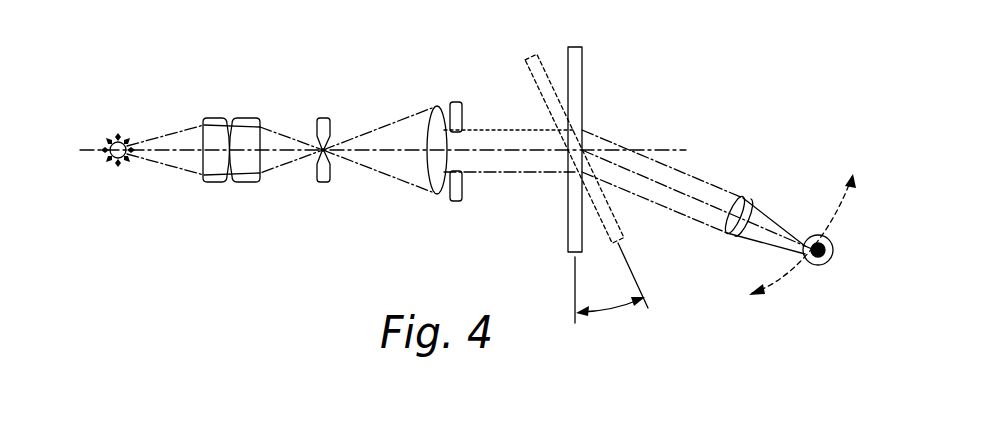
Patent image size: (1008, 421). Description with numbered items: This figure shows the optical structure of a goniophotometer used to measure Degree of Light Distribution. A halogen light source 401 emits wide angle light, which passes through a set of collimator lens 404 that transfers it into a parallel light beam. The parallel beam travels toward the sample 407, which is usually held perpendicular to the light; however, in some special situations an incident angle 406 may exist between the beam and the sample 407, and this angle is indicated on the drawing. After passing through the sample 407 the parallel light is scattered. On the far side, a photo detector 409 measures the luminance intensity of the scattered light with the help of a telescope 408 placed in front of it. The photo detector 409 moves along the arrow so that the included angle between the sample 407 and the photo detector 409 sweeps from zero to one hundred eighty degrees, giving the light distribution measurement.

The halogen light source 401 is at (128, 137).
The collimator lens 404 is at (434, 160).
The incident angle 406 is at (612, 310).
The sample 407 is at (583, 73).
The telescope 408 is at (757, 207).
The photo detector 409 is at (830, 264).